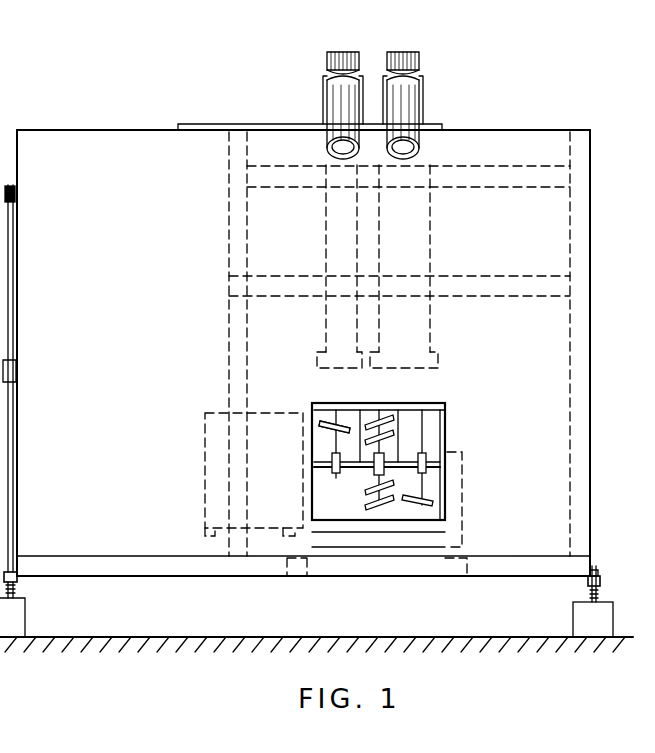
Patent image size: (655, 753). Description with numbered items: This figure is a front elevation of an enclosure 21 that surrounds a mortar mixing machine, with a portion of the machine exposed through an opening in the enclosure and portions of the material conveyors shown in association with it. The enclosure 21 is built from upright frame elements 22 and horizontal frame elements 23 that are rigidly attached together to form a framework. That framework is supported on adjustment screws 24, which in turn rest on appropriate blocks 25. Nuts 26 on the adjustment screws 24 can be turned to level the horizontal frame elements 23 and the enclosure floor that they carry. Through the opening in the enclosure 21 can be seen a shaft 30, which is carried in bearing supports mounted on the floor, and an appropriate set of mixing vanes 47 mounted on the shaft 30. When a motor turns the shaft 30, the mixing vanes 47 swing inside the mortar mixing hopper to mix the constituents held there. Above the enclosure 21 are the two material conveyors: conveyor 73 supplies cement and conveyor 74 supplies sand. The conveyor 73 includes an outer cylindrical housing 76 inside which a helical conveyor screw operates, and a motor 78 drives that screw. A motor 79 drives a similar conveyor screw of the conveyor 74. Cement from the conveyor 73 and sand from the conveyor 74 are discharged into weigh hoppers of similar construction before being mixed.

The enclosure 21 is at (592, 195).
The upright frame elements 22 is at (228, 336).
The horizontal frame elements 23 is at (190, 566).
The adjustment screws 24 is at (16, 592).
The blocks 25 is at (8, 622).
The nuts 26 is at (18, 578).
The shaft 30 is at (350, 472).
The mixing vanes 47 is at (320, 422).
The conveyor 73 is at (323, 82).
The conveyor 74 is at (424, 100).
The outer cylindrical housing 76 is at (328, 145).
The motor 78 is at (339, 53).
The motor 79 is at (402, 53).